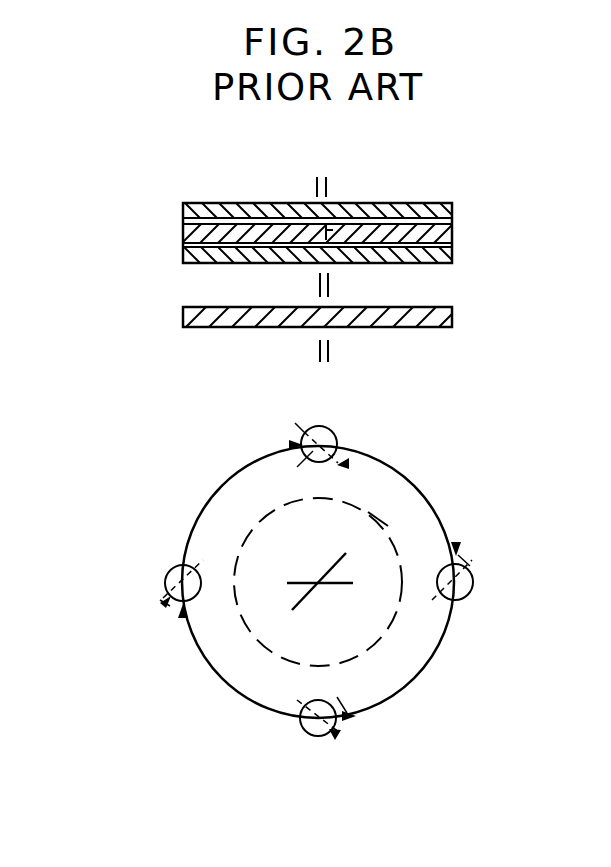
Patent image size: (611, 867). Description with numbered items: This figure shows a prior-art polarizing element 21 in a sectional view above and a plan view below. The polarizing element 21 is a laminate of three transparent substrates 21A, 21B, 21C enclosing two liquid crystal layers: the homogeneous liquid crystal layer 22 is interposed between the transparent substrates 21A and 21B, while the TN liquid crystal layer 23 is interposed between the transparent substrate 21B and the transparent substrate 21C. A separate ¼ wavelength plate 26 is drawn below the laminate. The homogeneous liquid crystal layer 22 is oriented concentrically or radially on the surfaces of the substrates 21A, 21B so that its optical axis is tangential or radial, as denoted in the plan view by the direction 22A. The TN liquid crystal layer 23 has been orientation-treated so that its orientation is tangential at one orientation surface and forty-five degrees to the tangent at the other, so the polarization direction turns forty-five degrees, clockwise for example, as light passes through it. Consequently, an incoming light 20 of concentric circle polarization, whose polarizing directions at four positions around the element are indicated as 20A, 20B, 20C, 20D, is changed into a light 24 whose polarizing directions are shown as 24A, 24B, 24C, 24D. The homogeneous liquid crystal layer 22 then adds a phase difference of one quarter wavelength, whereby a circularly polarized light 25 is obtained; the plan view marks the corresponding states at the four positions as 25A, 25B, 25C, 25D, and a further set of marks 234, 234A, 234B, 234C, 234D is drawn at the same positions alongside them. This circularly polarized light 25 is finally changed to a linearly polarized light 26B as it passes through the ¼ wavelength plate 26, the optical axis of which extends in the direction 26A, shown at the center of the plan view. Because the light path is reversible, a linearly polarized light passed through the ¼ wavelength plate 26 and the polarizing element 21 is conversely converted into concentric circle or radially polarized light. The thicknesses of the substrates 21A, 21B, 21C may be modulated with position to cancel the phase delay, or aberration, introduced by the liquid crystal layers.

The light of concentric circle polarization 20 is at (327, 183).
The polarizing element 21 is at (183, 233).
The transparent substrate 21A is at (452, 256).
The transparent substrate 21B is at (452, 233).
The transparent substrate 21C is at (452, 206).
The homogeneous liquid crystal layer 22 is at (452, 245).
The TN liquid crystal layer 23 is at (452, 221).
The light of polarization 24 is at (355, 222).
The circularly polarized light 25 is at (328, 281).
The ¼ wavelength plate 26 is at (452, 318).
The electrode 234 is at (328, 348).
The polarizing direction 20A is at (300, 445).
The polarizing direction 20B is at (183, 606).
The polarizing direction 20C is at (342, 722).
The polarizing direction 20D is at (458, 552).
The polarizing direction 24A is at (340, 464).
The polarizing direction 24B is at (165, 600).
The polarizing direction 24C is at (332, 732).
The polarizing direction 24D is at (468, 562).
The electrode position A 25A is at (337, 426).
The electrode position B 25B is at (167, 572).
The electrode position C 25C is at (309, 735).
The electrode position D 25D is at (470, 595).
The electrode position A 234A is at (306, 462).
The electrode position B 234B is at (170, 598).
The electrode position C 234C is at (348, 716).
The electrode position D 234D is at (468, 568).
The optical axis direction 22A is at (378, 520).
The optical axis direction 26A is at (293, 582).
The linearly polarized light 26B is at (333, 562).